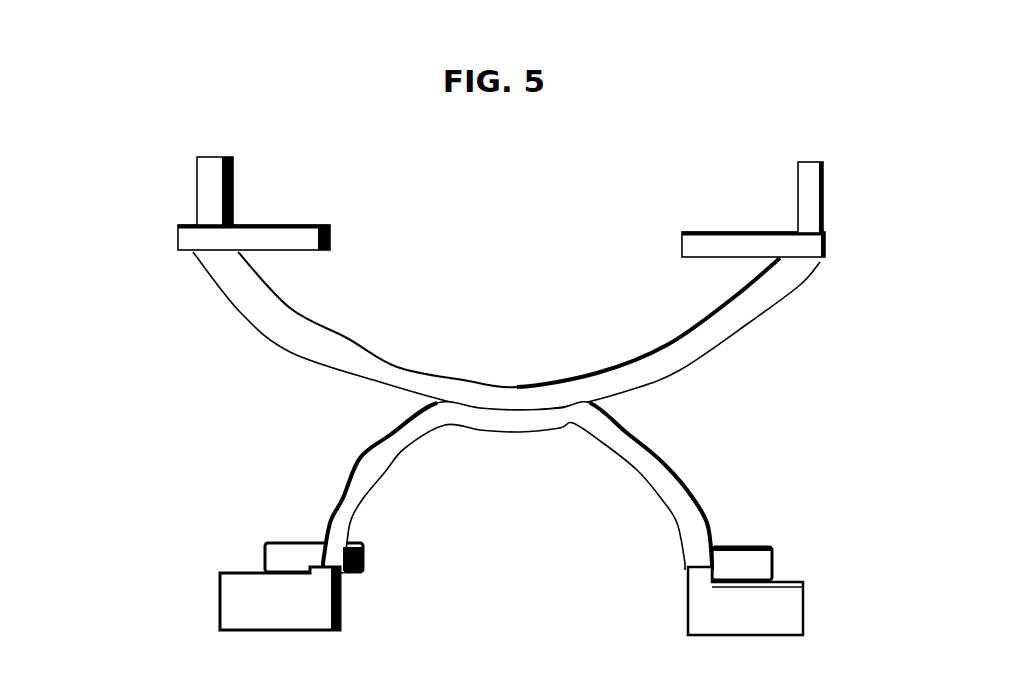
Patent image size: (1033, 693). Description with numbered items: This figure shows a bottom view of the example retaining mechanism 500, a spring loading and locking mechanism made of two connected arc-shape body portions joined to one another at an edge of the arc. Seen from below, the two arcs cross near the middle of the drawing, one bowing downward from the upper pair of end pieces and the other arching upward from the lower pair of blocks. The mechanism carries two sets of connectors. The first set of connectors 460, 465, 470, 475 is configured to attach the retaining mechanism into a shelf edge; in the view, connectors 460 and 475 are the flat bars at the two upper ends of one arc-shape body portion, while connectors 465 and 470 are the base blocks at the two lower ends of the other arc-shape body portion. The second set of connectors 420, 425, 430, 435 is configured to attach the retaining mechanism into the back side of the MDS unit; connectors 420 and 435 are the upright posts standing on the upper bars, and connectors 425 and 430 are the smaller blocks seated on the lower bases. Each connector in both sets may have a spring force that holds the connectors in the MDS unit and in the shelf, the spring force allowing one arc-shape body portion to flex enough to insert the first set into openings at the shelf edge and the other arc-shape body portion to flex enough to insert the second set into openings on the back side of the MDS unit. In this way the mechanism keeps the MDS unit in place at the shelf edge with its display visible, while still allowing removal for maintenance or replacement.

The signage unit assembly 500 is at (247, 111).
The connector 420 is at (190, 180).
The connector 425 is at (275, 542).
The connector 430 is at (748, 546).
The connector 435 is at (826, 200).
The connector 460 is at (319, 226).
The connector 465 is at (222, 592).
The connector 470 is at (803, 616).
The connector 475 is at (693, 233).